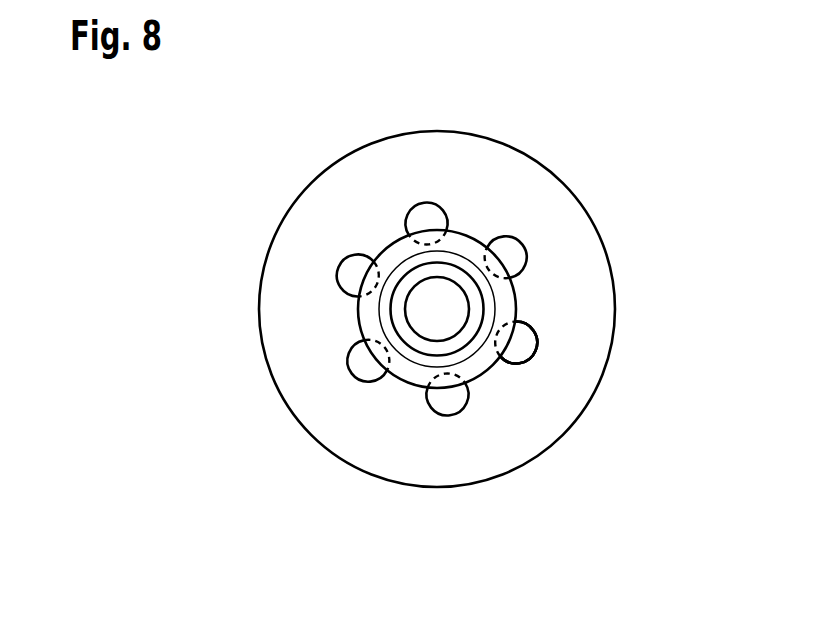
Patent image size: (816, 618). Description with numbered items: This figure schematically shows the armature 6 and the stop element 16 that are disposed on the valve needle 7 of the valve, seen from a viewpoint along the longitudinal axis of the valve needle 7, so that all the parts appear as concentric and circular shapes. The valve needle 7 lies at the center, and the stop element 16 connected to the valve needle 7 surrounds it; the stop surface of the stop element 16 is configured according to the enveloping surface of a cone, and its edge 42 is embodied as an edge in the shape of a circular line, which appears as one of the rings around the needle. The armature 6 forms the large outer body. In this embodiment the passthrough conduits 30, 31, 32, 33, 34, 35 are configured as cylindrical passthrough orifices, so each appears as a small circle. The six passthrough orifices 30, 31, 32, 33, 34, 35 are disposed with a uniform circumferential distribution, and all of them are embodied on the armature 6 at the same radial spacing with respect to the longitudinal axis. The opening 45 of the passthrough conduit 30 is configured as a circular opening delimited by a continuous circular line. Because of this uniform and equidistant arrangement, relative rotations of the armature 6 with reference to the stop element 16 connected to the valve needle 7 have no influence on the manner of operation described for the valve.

The armature 6 is at (483, 163).
The valve needle 7 is at (445, 308).
The stop element 16 is at (370, 317).
The passthrough conduit 30 is at (522, 348).
The passthrough conduit 31 is at (510, 252).
The passthrough conduit 32 is at (423, 215).
The passthrough conduit 33 is at (357, 275).
The passthrough conduit 34 is at (363, 368).
The passthrough conduit 35 is at (448, 400).
The edge 42 is at (518, 335).
The opening 45 is at (513, 355).